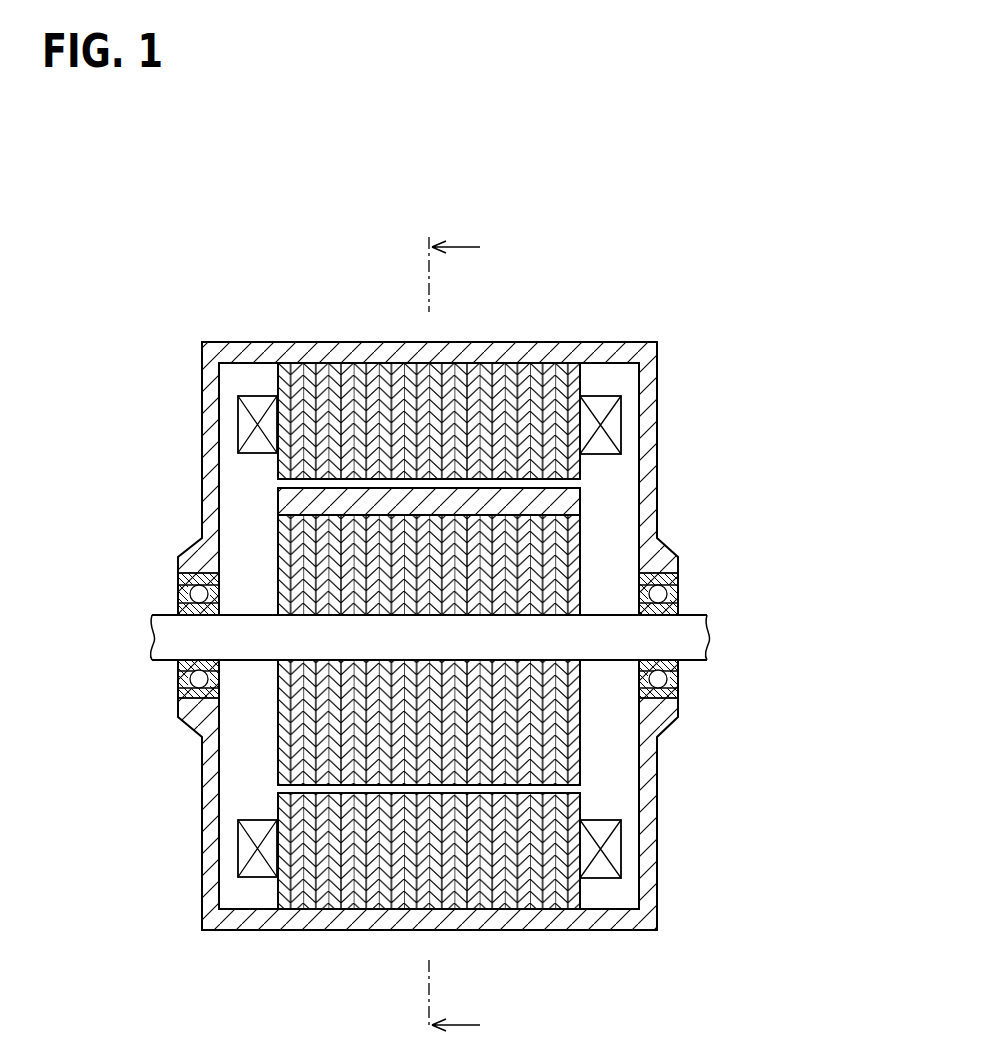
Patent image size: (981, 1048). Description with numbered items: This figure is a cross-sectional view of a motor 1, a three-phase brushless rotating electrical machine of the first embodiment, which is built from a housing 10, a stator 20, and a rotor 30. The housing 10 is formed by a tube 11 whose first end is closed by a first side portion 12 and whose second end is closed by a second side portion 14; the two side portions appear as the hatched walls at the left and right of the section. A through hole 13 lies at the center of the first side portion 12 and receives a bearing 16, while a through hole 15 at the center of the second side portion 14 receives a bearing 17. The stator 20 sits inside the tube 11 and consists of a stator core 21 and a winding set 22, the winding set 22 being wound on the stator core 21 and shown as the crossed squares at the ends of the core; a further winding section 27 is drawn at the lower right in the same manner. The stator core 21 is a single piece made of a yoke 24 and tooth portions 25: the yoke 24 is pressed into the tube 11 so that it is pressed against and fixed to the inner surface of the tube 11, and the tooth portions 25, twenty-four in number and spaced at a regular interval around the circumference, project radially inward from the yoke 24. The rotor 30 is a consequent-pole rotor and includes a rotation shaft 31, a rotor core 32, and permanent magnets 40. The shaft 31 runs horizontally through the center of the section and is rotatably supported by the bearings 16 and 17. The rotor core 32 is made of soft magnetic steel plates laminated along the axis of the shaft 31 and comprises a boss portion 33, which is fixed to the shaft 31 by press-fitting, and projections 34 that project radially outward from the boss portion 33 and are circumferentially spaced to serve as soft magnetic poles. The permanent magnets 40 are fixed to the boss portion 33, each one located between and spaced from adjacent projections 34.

The motor 1 is at (435, 629).
The housing 10 is at (438, 602).
The tube 11 is at (605, 352).
The first side portion 12 is at (210, 844).
The through hole 13 is at (178, 592).
The second side portion 14 is at (648, 797).
The through hole 15 is at (680, 596).
The bearing 16 is at (195, 679).
The bearing 17 is at (660, 680).
The stator 20 is at (426, 636).
The stator core 21 is at (339, 421).
The winding set 22 is at (612, 430).
The yoke 24 is at (285, 378).
The tooth portions 25 is at (285, 468).
The stator coil 27 is at (615, 850).
The rotor 30 is at (435, 658).
The rotation shaft 31 is at (690, 643).
The rotor core 32 is at (335, 660).
The boss portion 33 is at (278, 667).
The projections 34 is at (283, 768).
The permanent magnets 40 is at (283, 503).